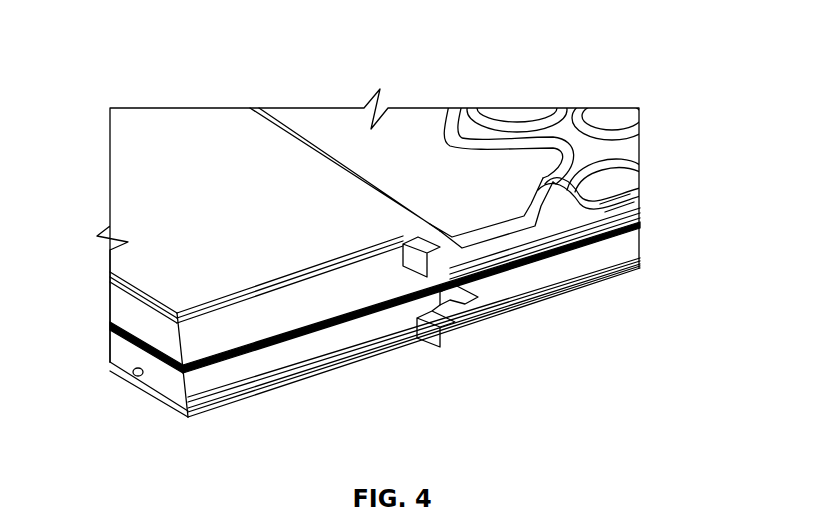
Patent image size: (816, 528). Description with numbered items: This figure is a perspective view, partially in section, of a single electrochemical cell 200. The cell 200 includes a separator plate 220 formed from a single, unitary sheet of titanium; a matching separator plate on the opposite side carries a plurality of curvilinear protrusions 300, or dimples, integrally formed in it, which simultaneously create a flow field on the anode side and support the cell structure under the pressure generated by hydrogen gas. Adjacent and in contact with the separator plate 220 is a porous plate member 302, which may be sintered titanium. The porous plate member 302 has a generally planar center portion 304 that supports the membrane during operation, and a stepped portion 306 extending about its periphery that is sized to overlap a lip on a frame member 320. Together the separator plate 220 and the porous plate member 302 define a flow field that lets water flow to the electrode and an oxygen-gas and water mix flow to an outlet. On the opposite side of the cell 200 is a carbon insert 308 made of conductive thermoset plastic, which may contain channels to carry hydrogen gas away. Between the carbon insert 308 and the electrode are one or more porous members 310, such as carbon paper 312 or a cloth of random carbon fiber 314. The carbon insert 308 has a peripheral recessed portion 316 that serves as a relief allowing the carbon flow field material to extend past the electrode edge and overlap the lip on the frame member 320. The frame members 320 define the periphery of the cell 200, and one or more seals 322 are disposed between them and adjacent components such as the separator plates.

The cell 200 is at (133, 44).
The separator plate 220 is at (125, 228).
The curvilinear protrusions 300 is at (487, 236).
The porous plate member 302 is at (633, 206).
The center portion 304 is at (585, 224).
The stepped portion 306 is at (430, 258).
The carbon insert 308 is at (517, 311).
The porous members 310 is at (465, 302).
The carbon paper 312 is at (405, 262).
The cloth of random carbon fiber 314 is at (538, 264).
The recessed portion 316 is at (432, 331).
The frame member 320 is at (203, 332).
The seals 322 is at (292, 270).